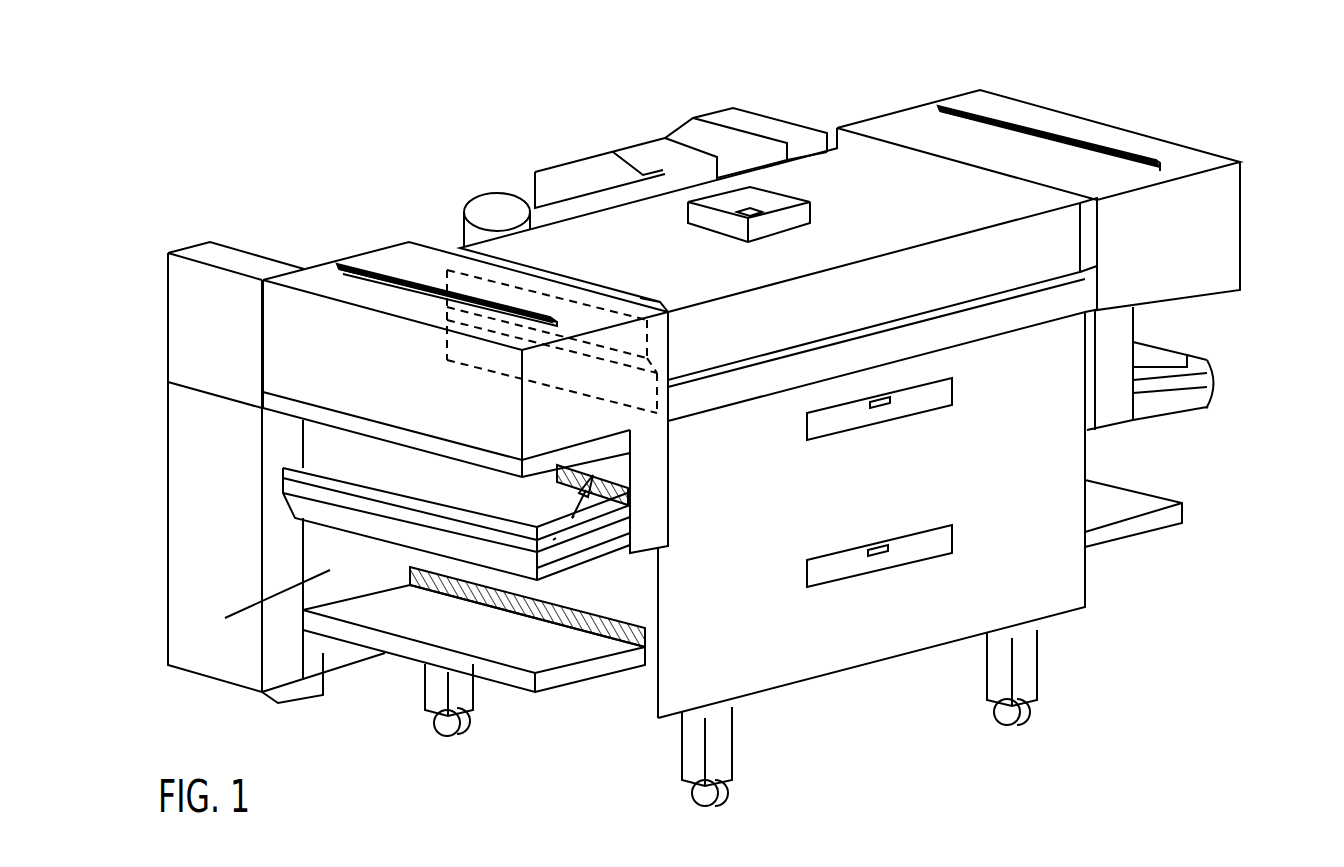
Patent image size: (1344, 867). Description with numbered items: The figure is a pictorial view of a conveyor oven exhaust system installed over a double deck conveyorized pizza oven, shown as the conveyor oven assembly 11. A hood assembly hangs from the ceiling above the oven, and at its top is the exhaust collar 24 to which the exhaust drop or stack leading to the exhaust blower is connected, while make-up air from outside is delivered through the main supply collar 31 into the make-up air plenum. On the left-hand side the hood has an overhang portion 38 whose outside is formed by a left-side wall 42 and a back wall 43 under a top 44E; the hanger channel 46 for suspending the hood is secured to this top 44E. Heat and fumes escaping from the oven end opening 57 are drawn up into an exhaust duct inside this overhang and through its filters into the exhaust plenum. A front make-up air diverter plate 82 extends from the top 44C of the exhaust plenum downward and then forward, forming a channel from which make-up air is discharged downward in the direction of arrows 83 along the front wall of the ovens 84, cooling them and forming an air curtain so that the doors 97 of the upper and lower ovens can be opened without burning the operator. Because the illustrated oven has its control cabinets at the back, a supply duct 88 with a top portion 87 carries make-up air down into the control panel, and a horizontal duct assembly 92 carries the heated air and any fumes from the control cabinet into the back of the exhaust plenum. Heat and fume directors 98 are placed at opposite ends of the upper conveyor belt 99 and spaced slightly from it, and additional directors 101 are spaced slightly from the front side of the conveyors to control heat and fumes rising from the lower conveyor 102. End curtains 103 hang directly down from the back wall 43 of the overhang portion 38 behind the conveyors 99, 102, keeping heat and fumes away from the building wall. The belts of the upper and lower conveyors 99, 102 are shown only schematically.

The conveyor oven assembly 11 is at (890, 670).
The exhaust collar 24 is at (710, 217).
The main supply collar 31 is at (490, 205).
The overhang portion 38 is at (287, 355).
The left-side wall 42 is at (376, 388).
The back wall 43 is at (305, 253).
The top of the exhaust plenum 44C is at (850, 185).
The top of the overhang portion 44E is at (418, 265).
The hanger channel 46 is at (345, 262).
The oven end opening 57 is at (572, 518).
The front make-up air diverter plate 82 is at (915, 409).
The arrows 83 is at (792, 457).
The front wall of the ovens 84 is at (731, 587).
The top portion of the supply duct 87 is at (206, 342).
The supply duct 88 is at (206, 562).
The horizontal duct assembly 92 is at (600, 160).
The doors 97 is at (928, 542).
The heat and fume directors 98 is at (427, 537).
The upper conveyor belt 99 is at (524, 510).
The directors 101 is at (553, 540).
The lower conveyor 102 is at (495, 655).
The end curtains 103 is at (263, 692).